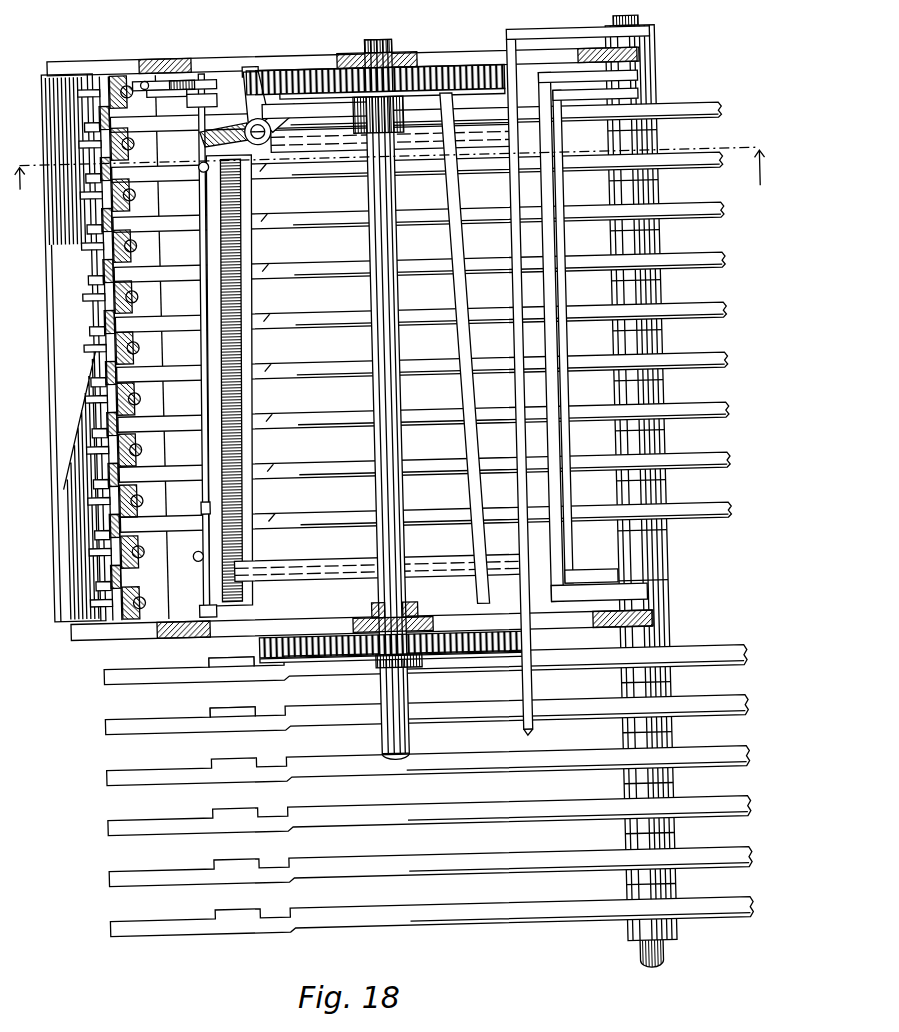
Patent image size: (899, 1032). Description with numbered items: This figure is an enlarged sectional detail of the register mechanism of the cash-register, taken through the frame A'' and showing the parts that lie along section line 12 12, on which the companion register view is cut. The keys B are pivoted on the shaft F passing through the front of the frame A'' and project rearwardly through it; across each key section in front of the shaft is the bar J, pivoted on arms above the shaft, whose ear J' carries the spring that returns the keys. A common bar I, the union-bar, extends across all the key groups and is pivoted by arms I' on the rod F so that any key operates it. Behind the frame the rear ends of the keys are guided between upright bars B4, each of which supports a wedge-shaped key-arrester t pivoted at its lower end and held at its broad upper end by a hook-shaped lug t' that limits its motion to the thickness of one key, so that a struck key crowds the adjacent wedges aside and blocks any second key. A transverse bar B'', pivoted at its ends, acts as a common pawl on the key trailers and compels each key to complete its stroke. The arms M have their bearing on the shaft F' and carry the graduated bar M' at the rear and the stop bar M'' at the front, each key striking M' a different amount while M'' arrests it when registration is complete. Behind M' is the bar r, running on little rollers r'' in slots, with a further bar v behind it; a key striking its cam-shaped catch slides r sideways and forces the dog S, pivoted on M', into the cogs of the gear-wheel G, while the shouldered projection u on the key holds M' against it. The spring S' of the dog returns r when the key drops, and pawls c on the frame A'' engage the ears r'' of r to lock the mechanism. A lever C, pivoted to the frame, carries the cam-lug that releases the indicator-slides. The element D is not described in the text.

The shaft F is at (651, 491).
The shaft or rod F' is at (403, 398).
The gear-wheel G is at (440, 66).
The keys B is at (421, 519).
The bar B'' is at (77, 459).
The upright bars B4 is at (141, 338).
The frame A'' is at (349, 346).
The side plate D is at (105, 134).
The wedge-shaped piece t is at (91, 348).
The hook-shaped lug t' is at (106, 347).
The arms M is at (373, 352).
The bar M' is at (245, 380).
The bar M'' is at (449, 348).
The dog S is at (248, 109).
The spring S' is at (321, 102).
The pawl c is at (158, 84).
The lever C is at (200, 88).
The projection u is at (208, 158).
The bar v is at (205, 342).
The bar r is at (194, 502).
The rollers / ears or lugs r'' is at (220, 327).
The common bar I is at (526, 387).
The arms I' is at (578, 24).
The bar J is at (601, 335).
The ear J' is at (594, 335).
The section line 12 is at (385, 167).